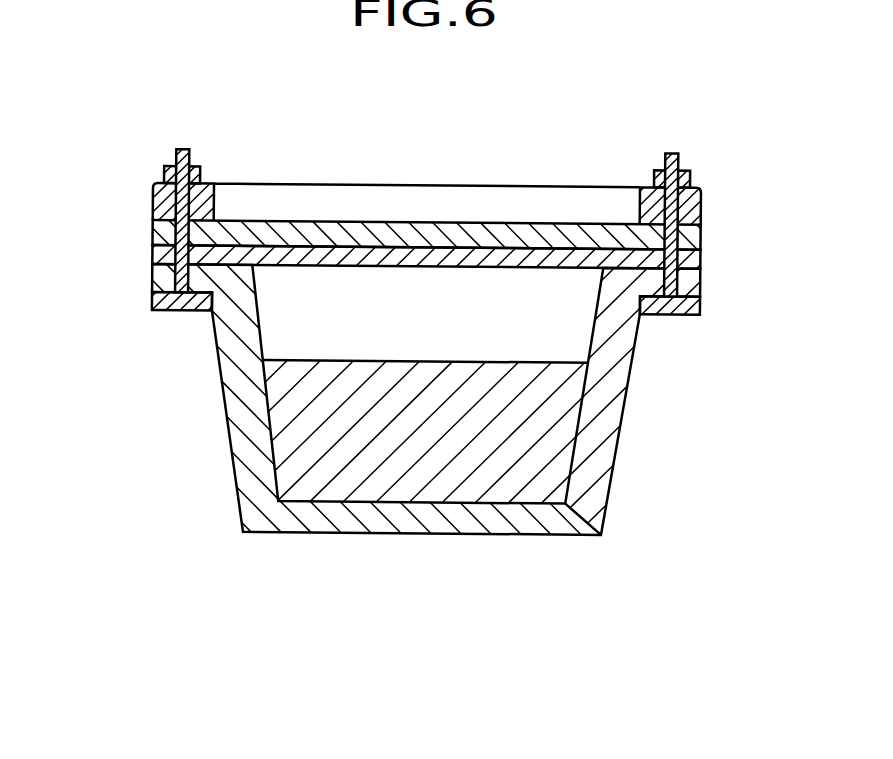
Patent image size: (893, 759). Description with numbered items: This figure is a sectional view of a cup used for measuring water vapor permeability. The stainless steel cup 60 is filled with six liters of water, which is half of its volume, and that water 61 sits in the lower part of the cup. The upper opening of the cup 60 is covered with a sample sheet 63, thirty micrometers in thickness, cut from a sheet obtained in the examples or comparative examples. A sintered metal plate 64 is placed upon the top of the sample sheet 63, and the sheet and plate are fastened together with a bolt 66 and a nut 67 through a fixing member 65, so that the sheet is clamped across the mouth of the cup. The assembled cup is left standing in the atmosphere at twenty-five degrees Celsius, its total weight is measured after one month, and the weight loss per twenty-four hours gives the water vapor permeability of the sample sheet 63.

The stainless steel cup 60 is at (607, 398).
The raw material 61 is at (542, 467).
The sample sheet 63 is at (152, 250).
The sintered metal plate 64 is at (155, 234).
The fixing member 65 is at (163, 207).
The bolt 66 is at (152, 297).
The nut 67 is at (163, 176).